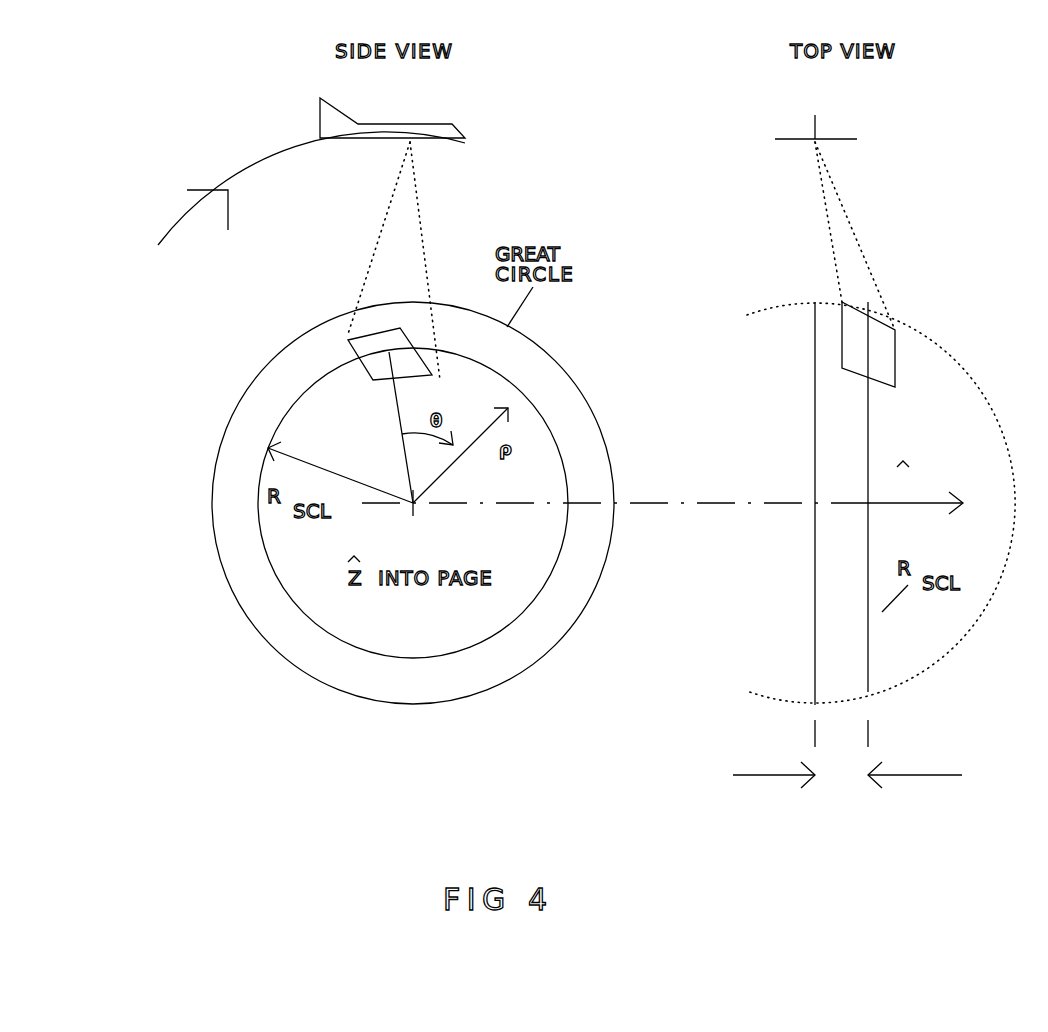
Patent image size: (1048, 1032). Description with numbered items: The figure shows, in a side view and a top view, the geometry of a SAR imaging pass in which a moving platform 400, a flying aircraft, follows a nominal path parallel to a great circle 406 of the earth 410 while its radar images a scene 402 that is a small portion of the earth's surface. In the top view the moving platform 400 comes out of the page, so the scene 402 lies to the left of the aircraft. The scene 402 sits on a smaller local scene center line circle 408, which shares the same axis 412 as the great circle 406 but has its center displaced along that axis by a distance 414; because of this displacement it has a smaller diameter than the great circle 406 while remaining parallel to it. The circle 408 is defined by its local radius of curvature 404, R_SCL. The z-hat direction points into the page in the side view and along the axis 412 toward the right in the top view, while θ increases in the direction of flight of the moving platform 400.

The moving platform 400 is at (677, 128).
The scene 402 is at (387, 342).
The local radius of curvature 404 is at (357, 473).
The great circle 406 is at (802, 342).
The local scene center line circle 408 is at (535, 395).
The earth 410 is at (775, 302).
The axis 412 is at (662, 487).
The distance 414 is at (847, 778).